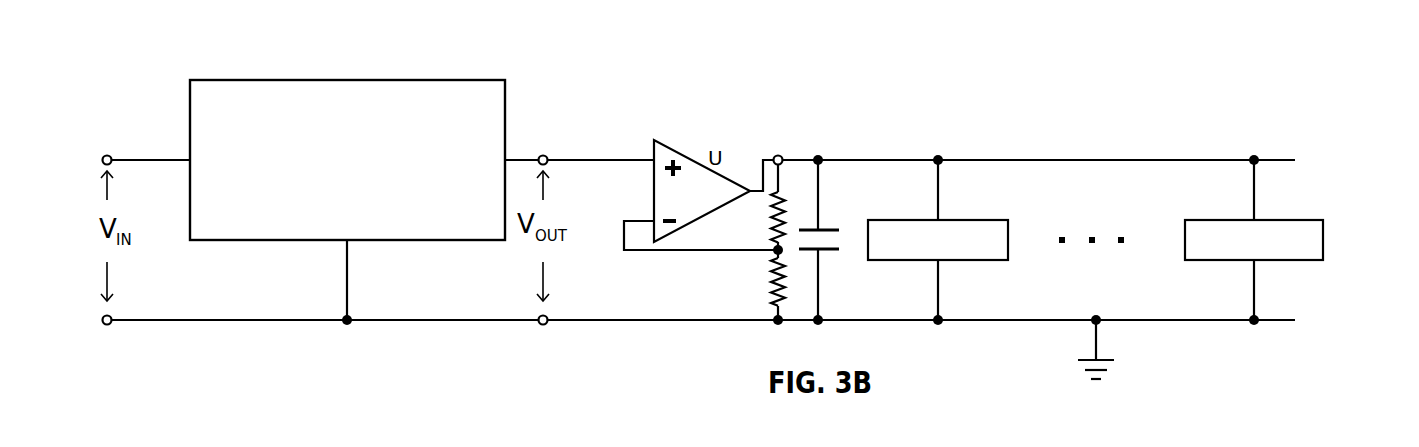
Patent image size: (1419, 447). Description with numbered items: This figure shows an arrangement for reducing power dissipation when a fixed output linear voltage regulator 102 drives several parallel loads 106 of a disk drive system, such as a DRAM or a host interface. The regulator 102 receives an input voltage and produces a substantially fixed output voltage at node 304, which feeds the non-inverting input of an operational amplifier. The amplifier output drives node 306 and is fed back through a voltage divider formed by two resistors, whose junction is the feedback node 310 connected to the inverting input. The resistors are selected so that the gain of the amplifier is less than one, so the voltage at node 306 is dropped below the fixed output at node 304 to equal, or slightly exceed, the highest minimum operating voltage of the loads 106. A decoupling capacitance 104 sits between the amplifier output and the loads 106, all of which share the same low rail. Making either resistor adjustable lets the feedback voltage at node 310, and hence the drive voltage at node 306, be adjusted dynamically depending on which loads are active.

The fixed output linear voltage regulator 102 is at (465, 79).
The fixed output node 304 is at (545, 155).
The drive voltage node 306 is at (781, 155).
The feedback node 310 is at (772, 254).
The decoupling capacitance 104 is at (831, 255).
The loads 106 is at (988, 220).